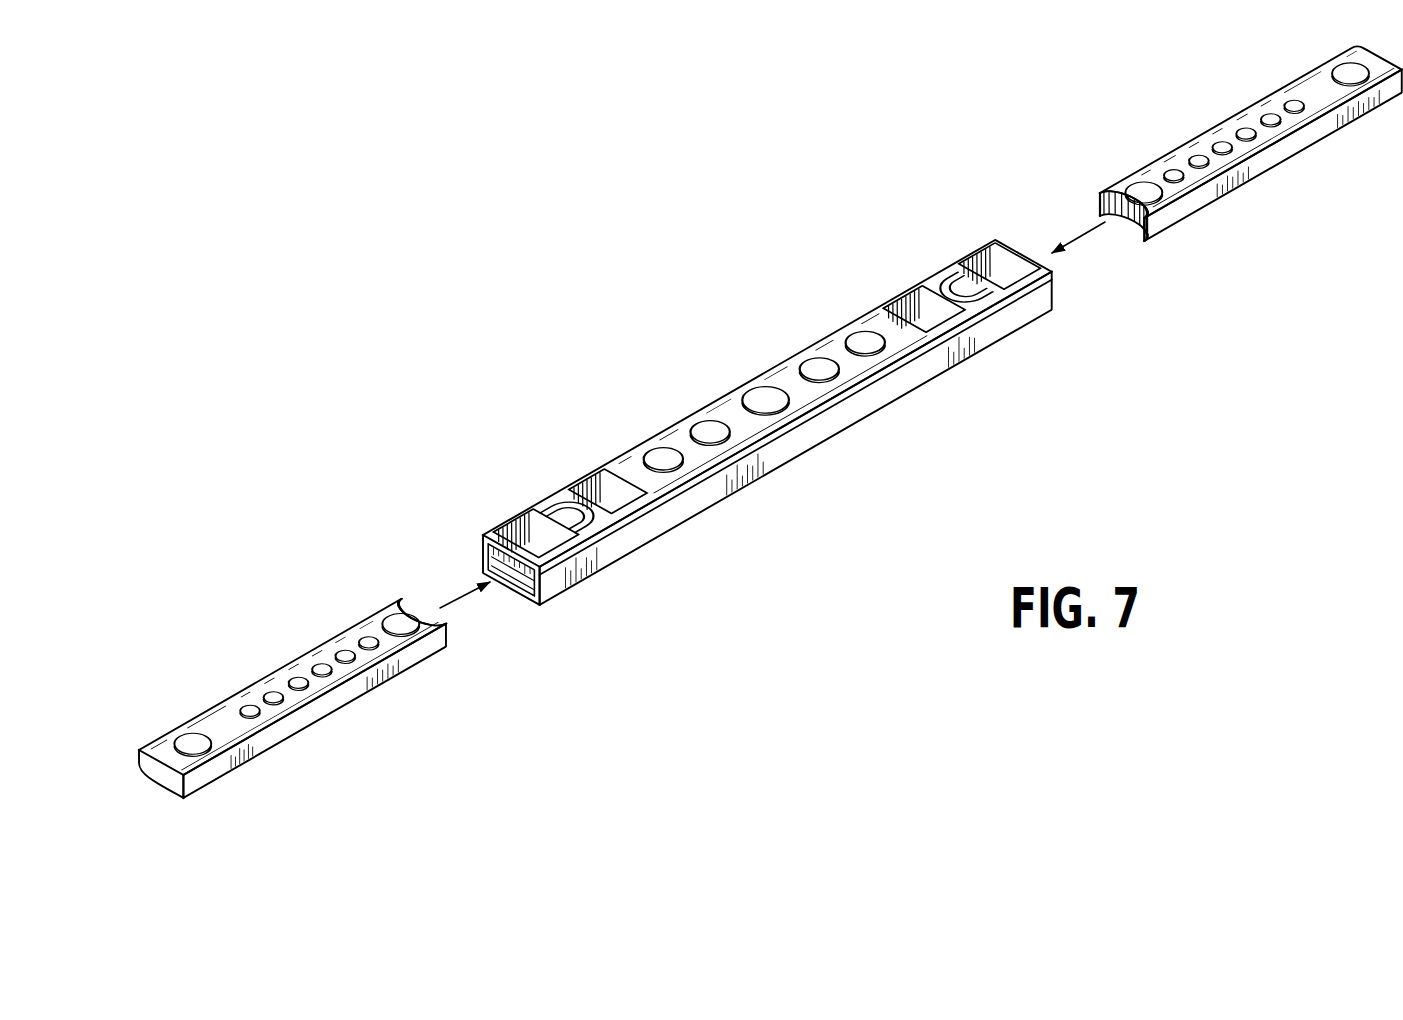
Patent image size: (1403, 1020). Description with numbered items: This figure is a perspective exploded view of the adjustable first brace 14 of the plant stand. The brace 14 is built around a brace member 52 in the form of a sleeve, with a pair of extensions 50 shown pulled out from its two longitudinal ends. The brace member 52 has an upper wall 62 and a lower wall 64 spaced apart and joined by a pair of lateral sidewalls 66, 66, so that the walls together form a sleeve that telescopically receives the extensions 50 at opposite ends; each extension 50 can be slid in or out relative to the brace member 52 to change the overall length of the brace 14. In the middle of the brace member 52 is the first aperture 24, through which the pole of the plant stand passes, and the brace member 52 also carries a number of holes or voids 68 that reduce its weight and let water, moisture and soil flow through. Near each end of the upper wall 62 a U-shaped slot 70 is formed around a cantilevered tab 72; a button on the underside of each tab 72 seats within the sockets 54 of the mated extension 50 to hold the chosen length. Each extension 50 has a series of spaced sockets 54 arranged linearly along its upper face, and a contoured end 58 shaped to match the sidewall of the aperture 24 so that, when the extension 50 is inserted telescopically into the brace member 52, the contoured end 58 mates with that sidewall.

The first brace 14 is at (568, 332).
The extension 50 is at (303, 735).
The sockets 54 is at (270, 690).
The contoured end 58 is at (408, 612).
The brace member 52 is at (684, 415).
The lateral sidewalls 66 is at (482, 548).
The lower wall 64 is at (518, 582).
The U-shaped slots 70 is at (583, 528).
The tab 72 is at (560, 510).
The upper wall 62 is at (710, 415).
The first aperture 24 is at (765, 398).
The voids 68 is at (868, 332).